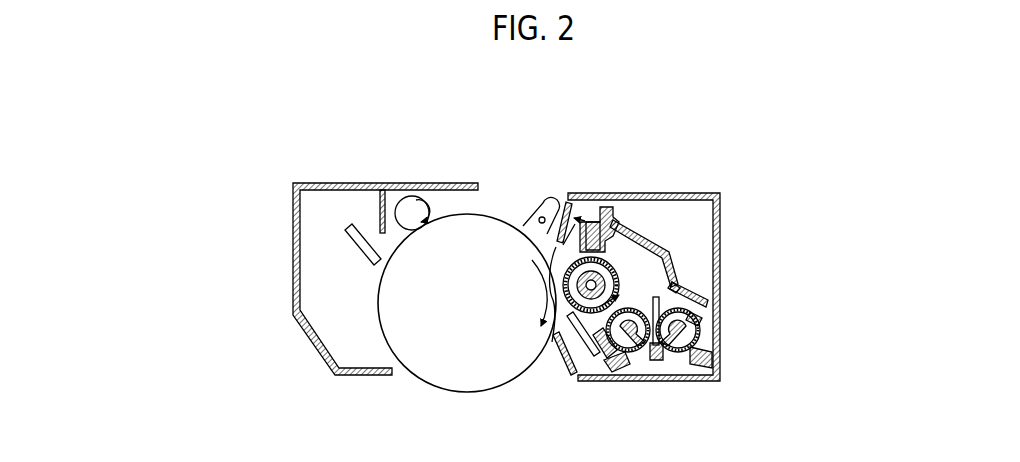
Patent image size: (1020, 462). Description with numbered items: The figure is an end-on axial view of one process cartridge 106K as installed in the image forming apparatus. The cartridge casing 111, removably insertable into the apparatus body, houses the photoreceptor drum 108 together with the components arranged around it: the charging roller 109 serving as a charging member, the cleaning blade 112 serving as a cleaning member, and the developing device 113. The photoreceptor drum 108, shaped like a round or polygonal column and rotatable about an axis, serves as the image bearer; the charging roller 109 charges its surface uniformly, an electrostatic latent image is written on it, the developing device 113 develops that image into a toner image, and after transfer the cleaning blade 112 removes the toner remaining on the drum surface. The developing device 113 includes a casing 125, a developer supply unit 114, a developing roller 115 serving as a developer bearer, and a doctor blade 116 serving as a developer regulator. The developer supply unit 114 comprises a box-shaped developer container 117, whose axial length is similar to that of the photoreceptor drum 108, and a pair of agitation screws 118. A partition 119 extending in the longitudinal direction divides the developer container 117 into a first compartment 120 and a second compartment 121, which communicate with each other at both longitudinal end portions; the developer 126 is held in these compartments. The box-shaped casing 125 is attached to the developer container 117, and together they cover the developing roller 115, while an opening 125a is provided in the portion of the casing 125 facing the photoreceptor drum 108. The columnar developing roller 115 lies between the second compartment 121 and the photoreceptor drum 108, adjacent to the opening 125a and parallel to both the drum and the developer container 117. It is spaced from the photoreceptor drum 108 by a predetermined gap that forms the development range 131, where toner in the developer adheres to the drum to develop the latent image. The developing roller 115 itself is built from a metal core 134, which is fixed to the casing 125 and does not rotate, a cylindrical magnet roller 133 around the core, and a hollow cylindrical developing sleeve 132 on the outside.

The process cartridge 106K is at (567, 122).
The photoreceptor drum 108 is at (462, 393).
The charging roller 109 is at (415, 197).
The cartridge casing 111 is at (362, 376).
The cleaning blade 112 is at (349, 246).
The developing device 113 is at (673, 256).
The developer supply unit 114 is at (698, 356).
The developing roller 115 is at (618, 253).
The doctor blade 116 is at (600, 221).
The developer container 117 is at (706, 381).
The agitation screws 118 is at (622, 351).
The partition 119 is at (675, 288).
The first compartment 120 is at (682, 302).
The second compartment 121 is at (641, 305).
The casing 125 is at (622, 223).
The opening 125a is at (585, 373).
The developer 126 is at (698, 318).
The development range 131 is at (558, 335).
The developing sleeve 132 is at (565, 214).
The magnet roller 133 is at (598, 272).
The metal core 134 is at (604, 270).